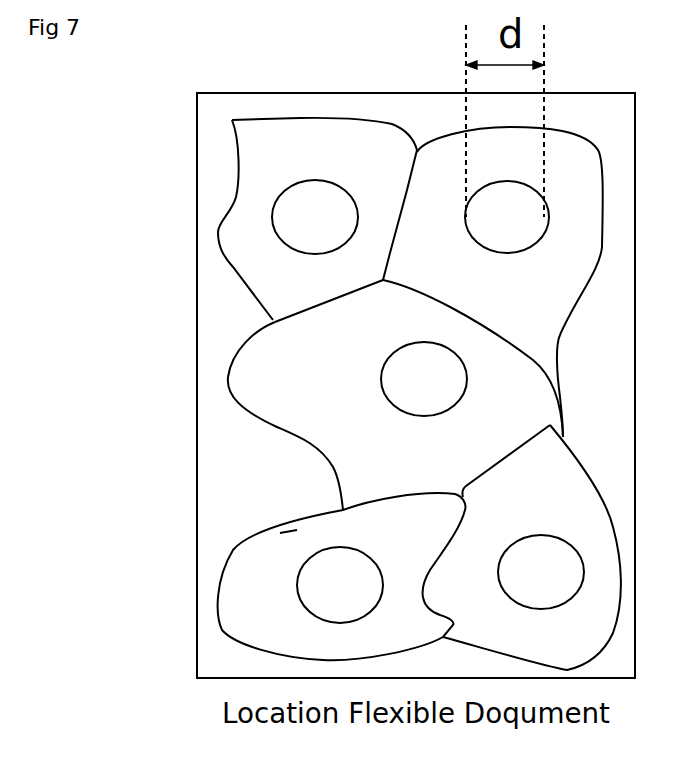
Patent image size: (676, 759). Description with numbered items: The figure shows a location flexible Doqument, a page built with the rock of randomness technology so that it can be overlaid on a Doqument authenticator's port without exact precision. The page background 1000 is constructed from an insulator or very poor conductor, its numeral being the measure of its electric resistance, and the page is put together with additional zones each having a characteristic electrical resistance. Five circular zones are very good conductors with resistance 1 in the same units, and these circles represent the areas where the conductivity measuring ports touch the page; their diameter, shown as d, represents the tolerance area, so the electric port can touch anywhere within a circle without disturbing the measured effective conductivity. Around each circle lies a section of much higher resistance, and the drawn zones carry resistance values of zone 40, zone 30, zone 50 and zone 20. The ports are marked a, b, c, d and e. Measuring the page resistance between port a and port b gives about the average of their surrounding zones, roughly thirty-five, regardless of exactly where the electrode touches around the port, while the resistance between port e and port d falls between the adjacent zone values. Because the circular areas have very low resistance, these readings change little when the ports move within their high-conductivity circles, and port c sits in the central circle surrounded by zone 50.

The very good conductor circular zone 1 is at (428, 401).
The resistance zone 20 is at (342, 576).
The resistance zone 30 is at (510, 282).
The resistance zone 40 is at (317, 220).
The resistance zone 50 is at (395, 395).
The background 1000 is at (416, 385).
The port a is at (280, 243).
The port b is at (538, 233).
The port c is at (382, 383).
The port d is at (317, 570).
The port e is at (568, 563).